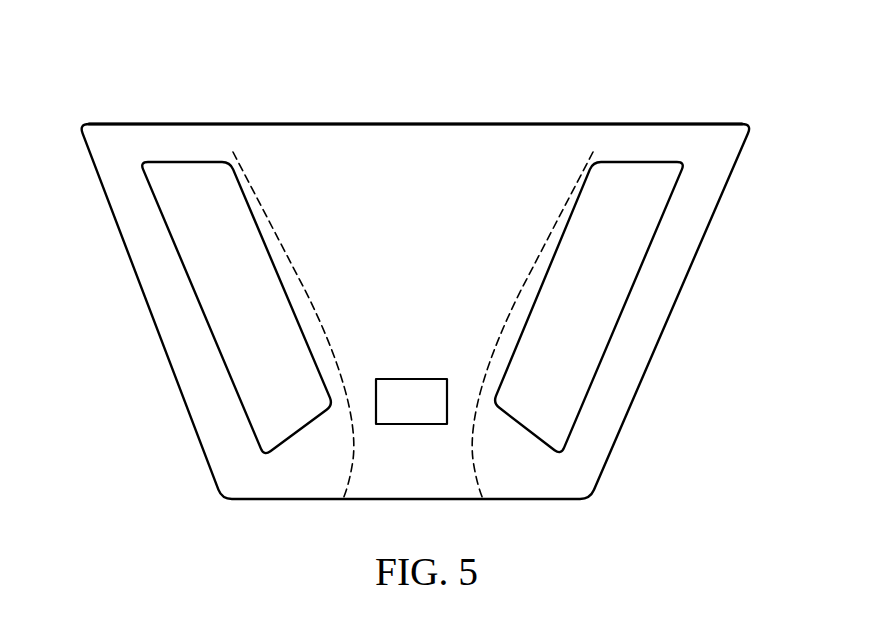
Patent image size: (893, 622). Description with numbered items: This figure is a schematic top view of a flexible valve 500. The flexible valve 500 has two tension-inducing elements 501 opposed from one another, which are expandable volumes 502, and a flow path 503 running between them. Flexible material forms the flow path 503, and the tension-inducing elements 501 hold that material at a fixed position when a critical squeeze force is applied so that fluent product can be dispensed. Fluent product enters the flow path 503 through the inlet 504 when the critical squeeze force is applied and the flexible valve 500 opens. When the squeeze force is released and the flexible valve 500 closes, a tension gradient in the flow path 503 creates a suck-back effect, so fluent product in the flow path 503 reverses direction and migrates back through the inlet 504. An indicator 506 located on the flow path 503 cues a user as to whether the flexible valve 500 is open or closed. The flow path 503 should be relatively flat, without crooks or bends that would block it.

The flexible valve 500 is at (176, 40).
The tension-inducing elements 501 is at (190, 231).
The expandable volumes 502 is at (263, 306).
The flow path 503 is at (578, 172).
The inlet 504 is at (347, 124).
The indicator 506 is at (436, 413).